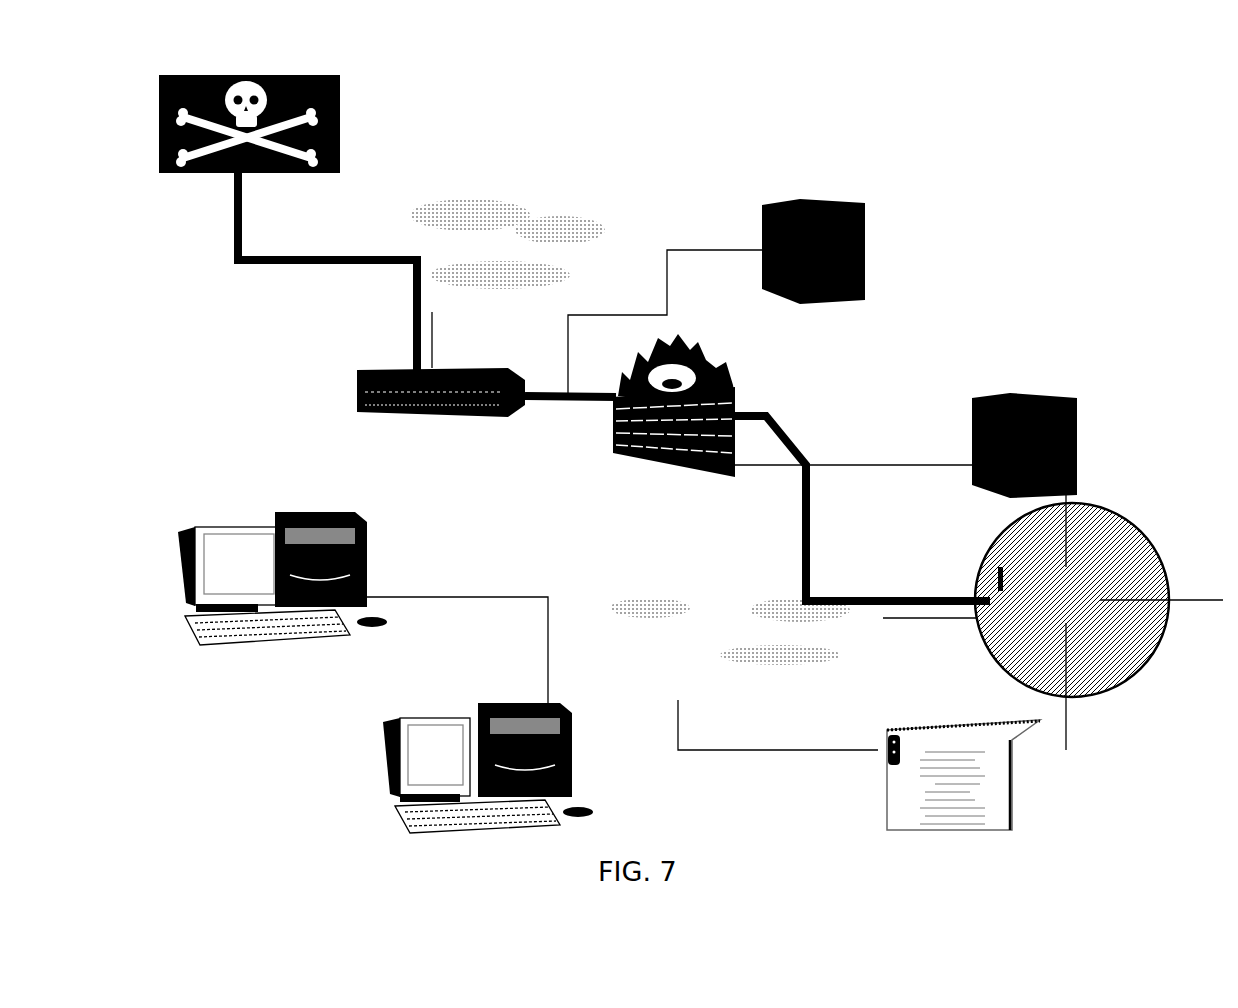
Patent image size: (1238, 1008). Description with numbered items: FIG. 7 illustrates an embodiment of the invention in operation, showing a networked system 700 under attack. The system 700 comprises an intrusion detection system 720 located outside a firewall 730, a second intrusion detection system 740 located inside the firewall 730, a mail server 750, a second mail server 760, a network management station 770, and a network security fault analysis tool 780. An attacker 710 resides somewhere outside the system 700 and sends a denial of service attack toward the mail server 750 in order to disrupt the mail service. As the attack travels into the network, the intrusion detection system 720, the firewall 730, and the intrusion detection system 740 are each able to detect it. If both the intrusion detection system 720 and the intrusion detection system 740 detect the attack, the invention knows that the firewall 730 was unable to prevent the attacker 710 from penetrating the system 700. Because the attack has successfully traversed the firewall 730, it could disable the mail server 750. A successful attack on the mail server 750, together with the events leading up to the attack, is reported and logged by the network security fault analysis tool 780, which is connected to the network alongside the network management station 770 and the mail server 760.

The system 700 is at (657, 37).
The attacker 710 is at (162, 94).
The intrusion detection system 720 is at (856, 204).
The firewall 730 is at (633, 455).
The intrusion detection system 740 is at (1074, 402).
The mail server 750 is at (1141, 664).
The mail server 760 is at (1023, 808).
The network management station 770 is at (381, 783).
The network security fault analysis tool 780 is at (178, 576).